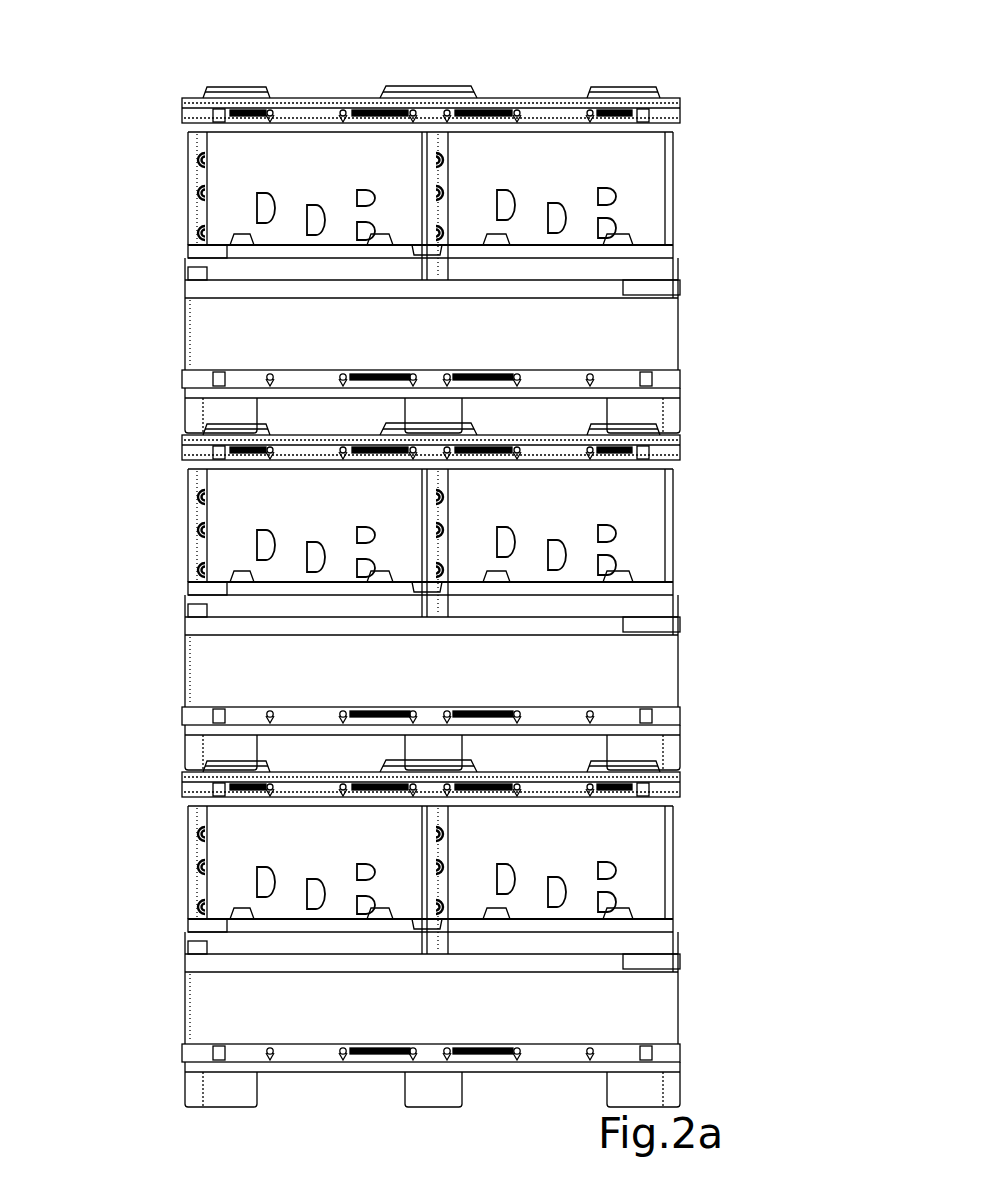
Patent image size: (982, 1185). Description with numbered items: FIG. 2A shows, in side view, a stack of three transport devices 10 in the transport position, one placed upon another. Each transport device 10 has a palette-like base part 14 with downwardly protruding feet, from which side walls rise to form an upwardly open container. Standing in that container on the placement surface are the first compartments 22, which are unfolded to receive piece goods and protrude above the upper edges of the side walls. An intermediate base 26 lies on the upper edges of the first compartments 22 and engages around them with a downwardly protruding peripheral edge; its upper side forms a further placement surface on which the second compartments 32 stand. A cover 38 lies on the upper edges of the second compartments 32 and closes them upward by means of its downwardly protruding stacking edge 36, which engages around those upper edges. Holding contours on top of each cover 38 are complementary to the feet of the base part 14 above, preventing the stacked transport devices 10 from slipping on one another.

The transport device 10 is at (700, 258).
The base part 14 is at (680, 362).
The first compartments 22 is at (660, 280).
The intermediate base 26 is at (212, 258).
The second compartments 32 is at (235, 157).
The stacking edge 36 is at (195, 118).
The cover 38 is at (547, 105).